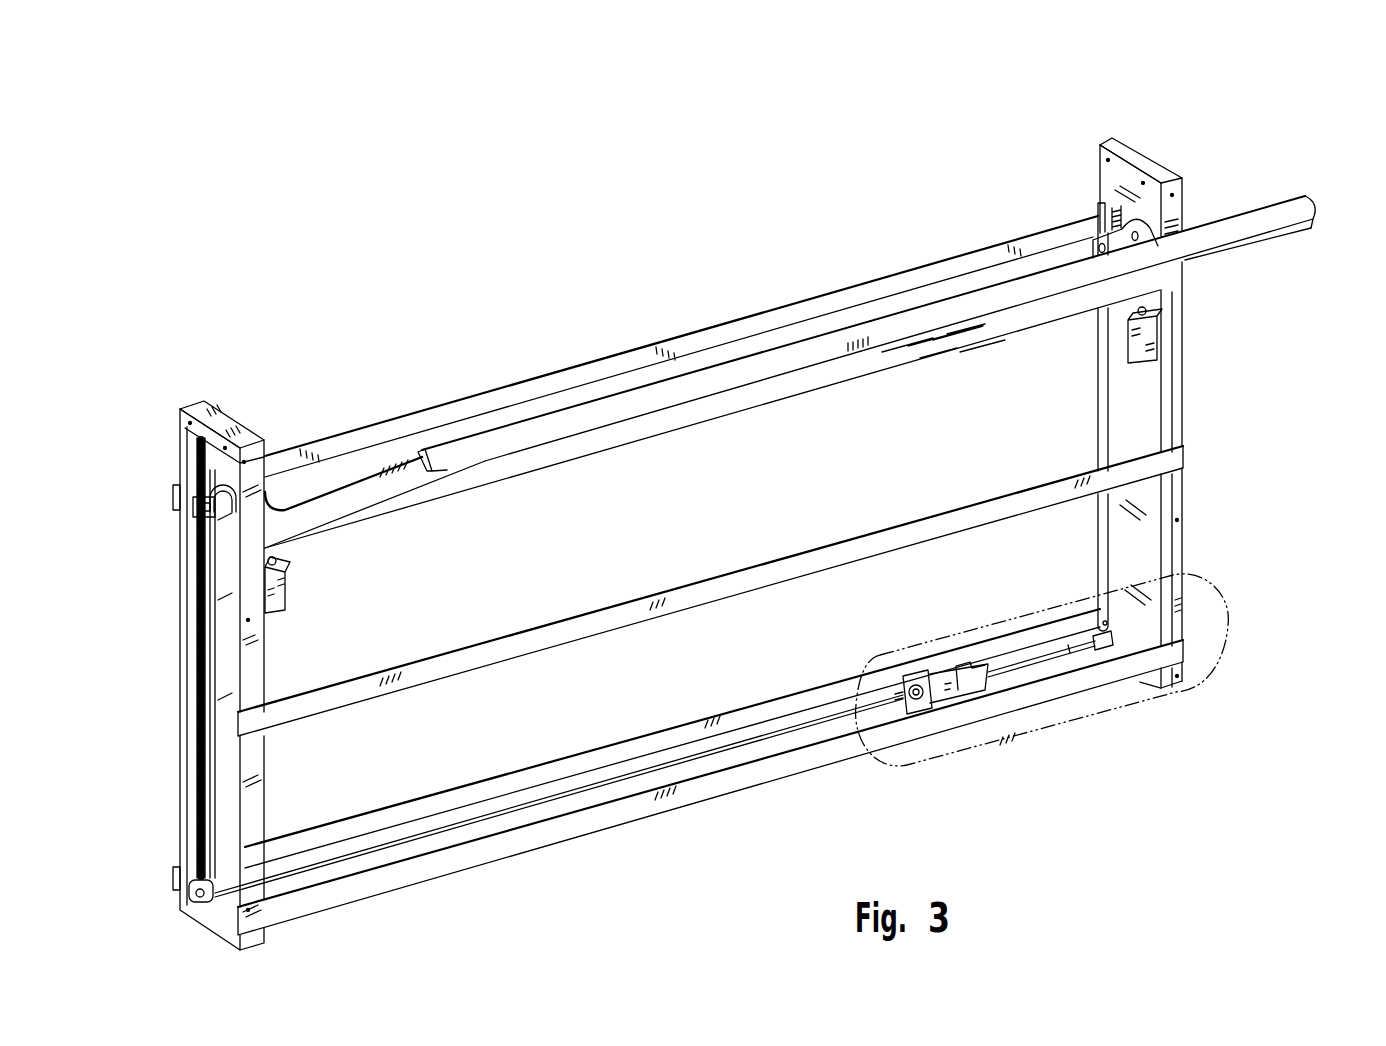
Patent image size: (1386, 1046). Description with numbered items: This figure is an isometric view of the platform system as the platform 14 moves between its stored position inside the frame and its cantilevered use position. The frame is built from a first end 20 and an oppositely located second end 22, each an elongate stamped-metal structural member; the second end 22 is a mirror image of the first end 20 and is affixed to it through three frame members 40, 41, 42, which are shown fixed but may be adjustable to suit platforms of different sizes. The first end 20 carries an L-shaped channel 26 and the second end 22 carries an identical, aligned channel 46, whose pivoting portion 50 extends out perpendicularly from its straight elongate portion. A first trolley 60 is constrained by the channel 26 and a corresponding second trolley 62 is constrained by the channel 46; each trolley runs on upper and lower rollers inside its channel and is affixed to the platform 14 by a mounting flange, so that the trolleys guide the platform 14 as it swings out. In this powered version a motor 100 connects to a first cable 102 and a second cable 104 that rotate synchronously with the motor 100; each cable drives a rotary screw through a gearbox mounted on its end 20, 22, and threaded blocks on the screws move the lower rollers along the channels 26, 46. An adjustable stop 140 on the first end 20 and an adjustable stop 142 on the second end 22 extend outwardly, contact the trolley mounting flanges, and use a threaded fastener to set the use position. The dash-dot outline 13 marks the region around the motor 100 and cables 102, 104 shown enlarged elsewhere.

The actuator assembly detail area 13 is at (1217, 596).
The platform 14 is at (777, 390).
The first end 20 is at (240, 422).
The second end 22 is at (1123, 173).
The L-shaped channel 26 is at (235, 757).
The frame member 40 is at (525, 782).
The frame member 41 is at (695, 592).
The frame member 42 is at (797, 313).
The second channel 46 is at (1100, 352).
The pivoting portion 50 is at (1100, 207).
The first trolley 60 is at (382, 505).
The second trolley 62 is at (1298, 233).
The motor 100 is at (950, 694).
The first cable 102 is at (757, 742).
The second cable 104 is at (1072, 652).
The adjustable stop 140 is at (268, 598).
The adjustable stop 142 is at (1152, 333).